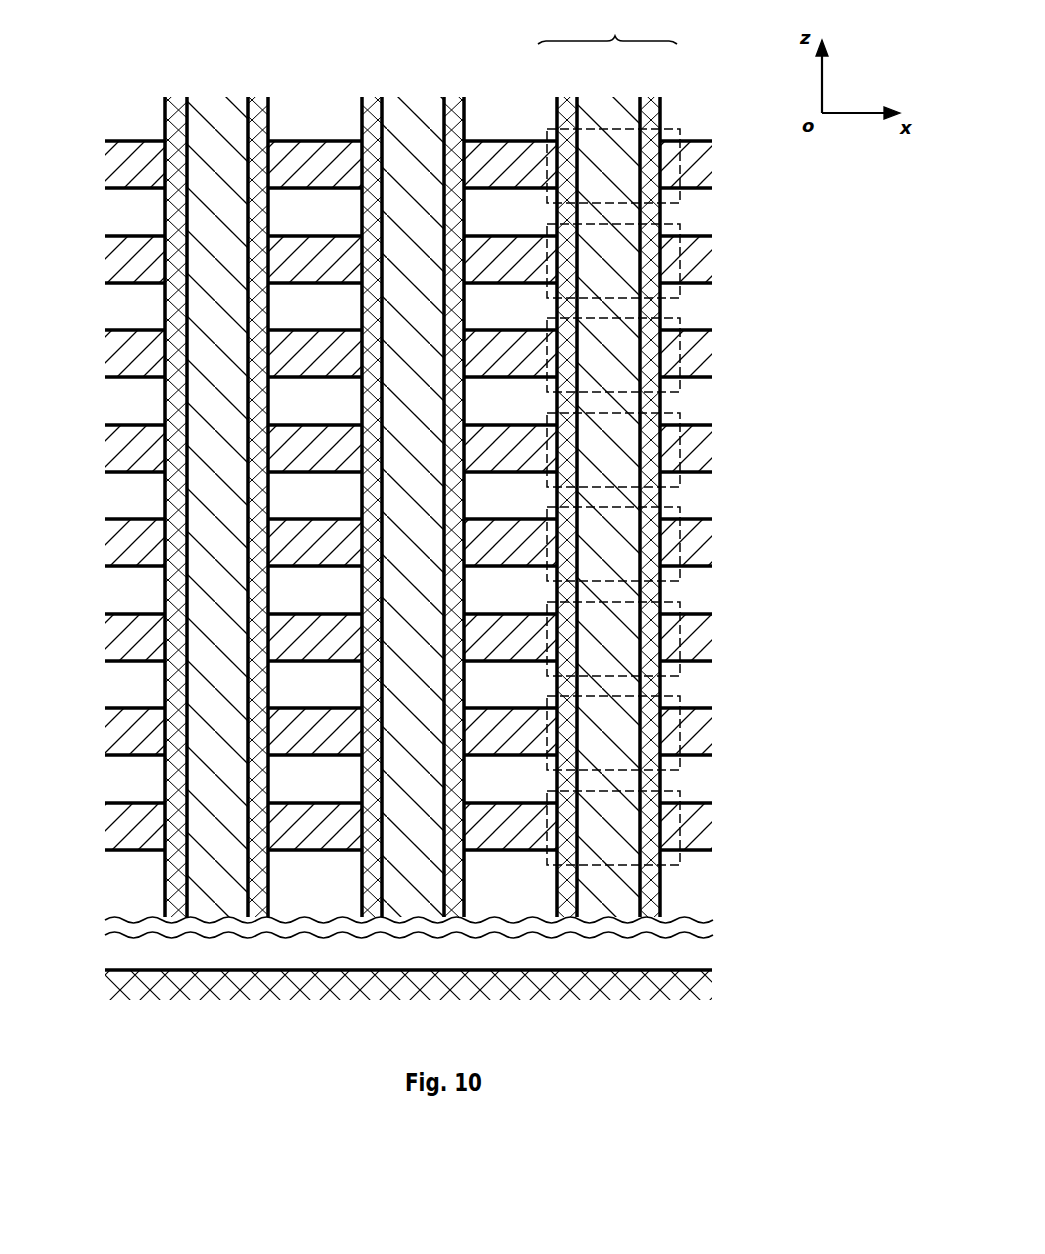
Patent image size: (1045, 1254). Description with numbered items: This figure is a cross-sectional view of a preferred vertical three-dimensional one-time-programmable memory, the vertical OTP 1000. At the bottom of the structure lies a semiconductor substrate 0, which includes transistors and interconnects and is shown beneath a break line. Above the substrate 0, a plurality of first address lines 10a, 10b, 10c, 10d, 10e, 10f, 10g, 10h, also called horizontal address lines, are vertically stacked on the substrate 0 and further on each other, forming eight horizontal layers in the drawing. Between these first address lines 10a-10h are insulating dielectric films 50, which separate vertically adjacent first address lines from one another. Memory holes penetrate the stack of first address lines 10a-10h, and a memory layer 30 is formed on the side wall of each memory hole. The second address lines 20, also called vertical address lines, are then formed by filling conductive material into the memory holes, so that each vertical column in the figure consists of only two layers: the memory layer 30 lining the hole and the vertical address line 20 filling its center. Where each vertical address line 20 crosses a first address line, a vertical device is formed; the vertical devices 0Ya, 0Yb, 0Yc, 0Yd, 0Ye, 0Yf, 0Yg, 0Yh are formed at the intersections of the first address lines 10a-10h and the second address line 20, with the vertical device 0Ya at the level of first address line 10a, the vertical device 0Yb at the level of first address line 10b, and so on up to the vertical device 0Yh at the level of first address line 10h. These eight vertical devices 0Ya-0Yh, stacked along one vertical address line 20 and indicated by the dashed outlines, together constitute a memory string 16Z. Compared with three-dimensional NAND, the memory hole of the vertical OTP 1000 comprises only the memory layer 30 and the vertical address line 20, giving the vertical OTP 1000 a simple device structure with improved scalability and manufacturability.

The vertical 3D-OTP 1000 is at (105, 98).
The memory string 16Z is at (607, 27).
The second address line 20 is at (593, 105).
The memory layer 30 is at (648, 103).
The vertical device 0Ya is at (547, 799).
The vertical device 0Yb is at (547, 704).
The vertical device 0Yc is at (547, 610).
The vertical device 0Yd is at (547, 515).
The vertical device 0Ye is at (547, 421).
The vertical device 0Yf is at (547, 326).
The vertical device 0Yg is at (547, 232).
The vertical device 0Yh is at (547, 137).
The first address line 10a is at (712, 839).
The first address line 10b is at (712, 744).
The first address line 10c is at (712, 650).
The first address line 10d is at (712, 555).
The first address line 10e is at (712, 461).
The first address line 10f is at (712, 366).
The first address line 10g is at (712, 272).
The first address line 10h is at (712, 177).
The insulating dielectric film 50 is at (314, 495).
The semiconductor substrate 0 is at (408, 987).